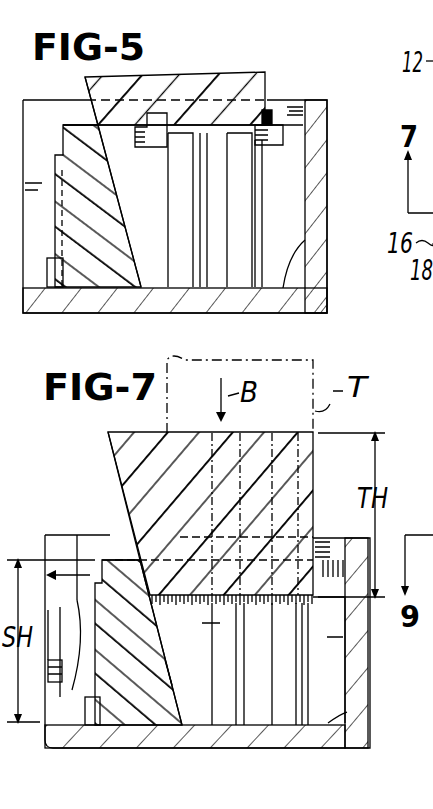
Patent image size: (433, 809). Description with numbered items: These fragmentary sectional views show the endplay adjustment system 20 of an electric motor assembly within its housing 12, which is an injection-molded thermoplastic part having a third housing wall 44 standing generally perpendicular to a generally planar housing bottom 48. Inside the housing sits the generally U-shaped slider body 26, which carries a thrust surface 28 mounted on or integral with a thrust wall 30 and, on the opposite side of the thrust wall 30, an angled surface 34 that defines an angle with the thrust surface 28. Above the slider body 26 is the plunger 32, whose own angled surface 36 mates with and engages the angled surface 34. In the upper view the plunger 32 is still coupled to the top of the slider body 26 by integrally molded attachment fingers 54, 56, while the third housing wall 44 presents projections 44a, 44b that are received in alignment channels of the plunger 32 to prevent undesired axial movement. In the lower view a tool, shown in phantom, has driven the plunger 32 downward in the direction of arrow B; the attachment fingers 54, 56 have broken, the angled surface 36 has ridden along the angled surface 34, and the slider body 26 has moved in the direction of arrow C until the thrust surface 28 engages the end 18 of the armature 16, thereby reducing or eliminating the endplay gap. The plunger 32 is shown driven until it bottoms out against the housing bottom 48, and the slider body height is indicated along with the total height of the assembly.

In FIG. 5, the housing 12 is at (318, 100).
In FIG. 7, the housing 12 is at (360, 695).
In FIG. 7, the armature 16 is at (60, 594).
In FIG. 7, the end 18 is at (64, 661).
In FIG. 7, the endplay adjustment system 20 is at (104, 494).
In FIG. 7, the slider body 26 is at (148, 734).
In FIG. 5, the thrust surface 28 is at (58, 218).
In FIG. 7, the thrust surface 28 is at (83, 700).
In FIG. 5, the thrust wall 30 is at (62, 126).
In FIG. 7, the thrust wall 30 is at (113, 562).
In FIG. 5, the plunger 32 is at (187, 68).
In FIG. 7, the plunger 32 is at (138, 427).
In FIG. 5, the angled surface 34 is at (110, 176).
In FIG. 7, the angled surface 34 is at (180, 680).
In FIG. 5, the angled surface 36 is at (137, 267).
In FIG. 7, the angled surface 36 is at (114, 464).
In FIG. 5, the third housing wall 44 is at (297, 152).
In FIG. 5, the projection 44a is at (190, 203).
In FIG. 7, the projection 44a is at (226, 712).
In FIG. 5, the projection 44b is at (243, 166).
In FIG. 7, the projection 44b is at (285, 712).
In FIG. 5, the housing bottom 48 is at (305, 240).
In FIG. 7, the housing bottom 48 is at (347, 712).
In FIG. 5, the attachment finger 54 is at (154, 112).
In FIG. 5, the attachment finger 56 is at (279, 95).